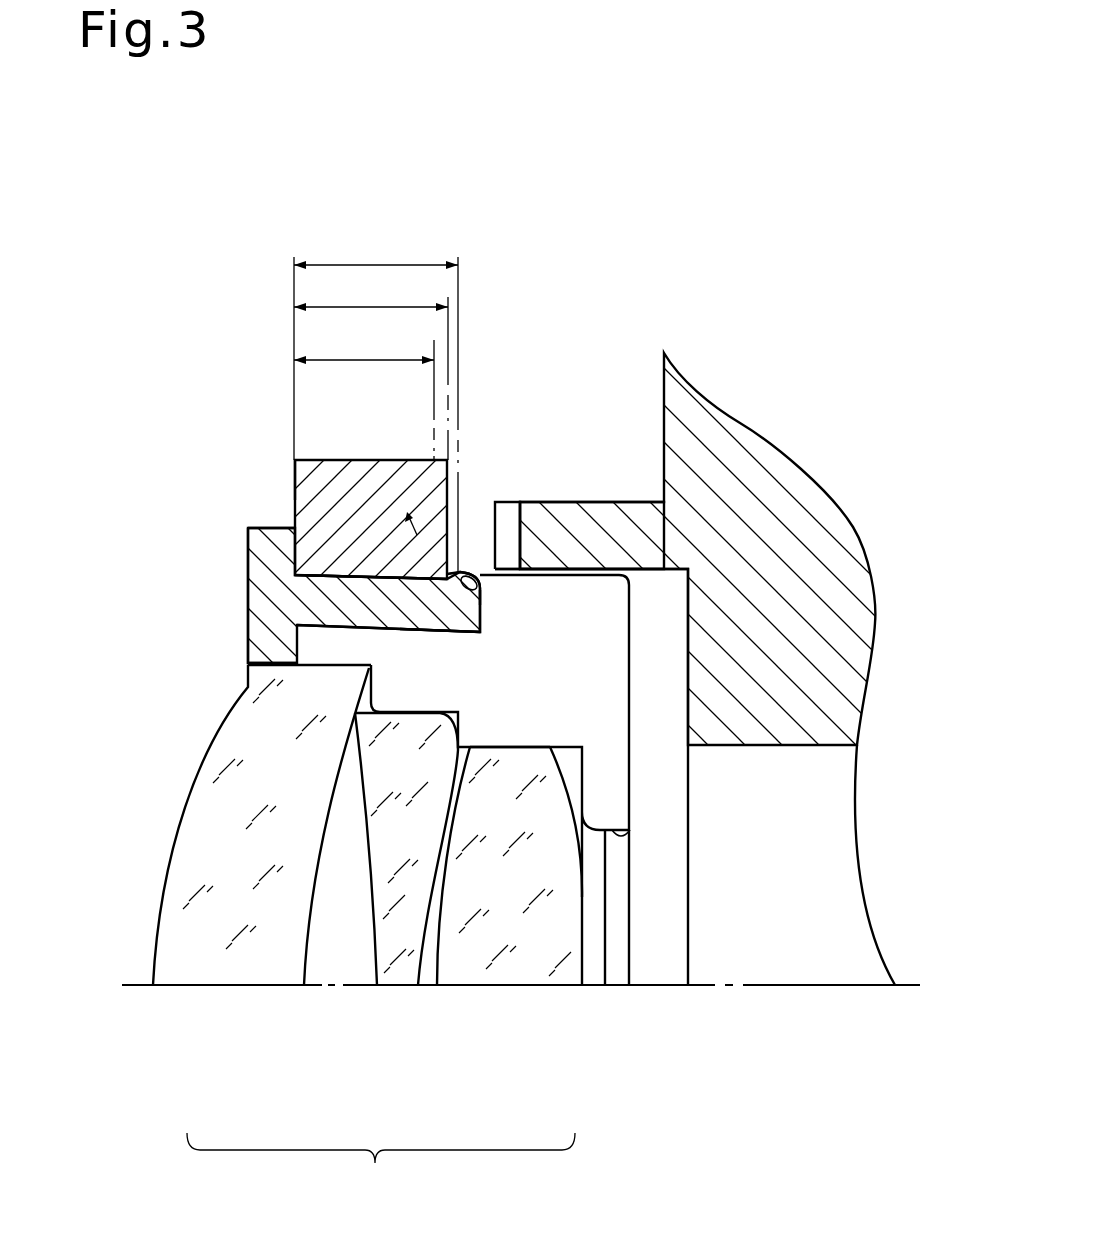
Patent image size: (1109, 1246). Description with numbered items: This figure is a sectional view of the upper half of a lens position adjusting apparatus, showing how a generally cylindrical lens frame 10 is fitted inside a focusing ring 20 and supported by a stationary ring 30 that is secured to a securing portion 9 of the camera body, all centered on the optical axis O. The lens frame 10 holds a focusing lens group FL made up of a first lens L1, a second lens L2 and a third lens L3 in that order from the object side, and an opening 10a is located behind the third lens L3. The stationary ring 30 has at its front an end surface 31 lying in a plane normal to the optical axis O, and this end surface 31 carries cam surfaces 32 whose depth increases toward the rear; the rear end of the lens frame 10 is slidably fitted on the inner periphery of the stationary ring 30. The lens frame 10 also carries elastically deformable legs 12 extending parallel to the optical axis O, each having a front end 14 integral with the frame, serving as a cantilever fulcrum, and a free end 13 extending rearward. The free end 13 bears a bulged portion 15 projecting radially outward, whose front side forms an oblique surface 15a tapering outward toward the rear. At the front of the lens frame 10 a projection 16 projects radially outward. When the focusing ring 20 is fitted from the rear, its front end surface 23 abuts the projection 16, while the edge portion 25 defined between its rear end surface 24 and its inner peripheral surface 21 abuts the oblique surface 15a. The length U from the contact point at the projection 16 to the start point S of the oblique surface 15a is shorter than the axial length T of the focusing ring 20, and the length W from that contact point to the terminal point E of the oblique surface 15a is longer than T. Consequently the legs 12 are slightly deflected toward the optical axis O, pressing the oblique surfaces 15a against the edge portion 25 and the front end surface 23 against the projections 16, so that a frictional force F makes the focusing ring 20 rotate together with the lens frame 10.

The securing portion 9 is at (807, 503).
The lens frame 10 is at (555, 593).
The opening 10a is at (637, 833).
The elastically deformable legs 12 is at (397, 640).
The free ends 13 is at (465, 622).
The front ends 14 is at (307, 602).
The bulged portions 15 is at (458, 573).
The oblique surfaces 15a is at (448, 572).
The projections 16 is at (263, 530).
The focusing ring 20 is at (368, 476).
The inner peripheral surface 21 is at (356, 624).
The front end surface 23 is at (292, 457).
The rear end surface 24 is at (457, 572).
The edge portion 25 is at (447, 576).
The stationary ring 30 is at (620, 532).
The end surface 31 is at (490, 523).
The cam surfaces 32 is at (510, 553).
The first lens L1 is at (240, 967).
The second lens L2 is at (402, 967).
The third lens L3 is at (519, 967).
The focusing lens group FL is at (381, 1166).
The optical axis O is at (132, 990).
The terminal points E is at (477, 588).
The frictional force F is at (403, 509).
The start points S is at (444, 583).
The axial length T is at (327, 306).
The length U is at (357, 360).
The length W is at (417, 263).